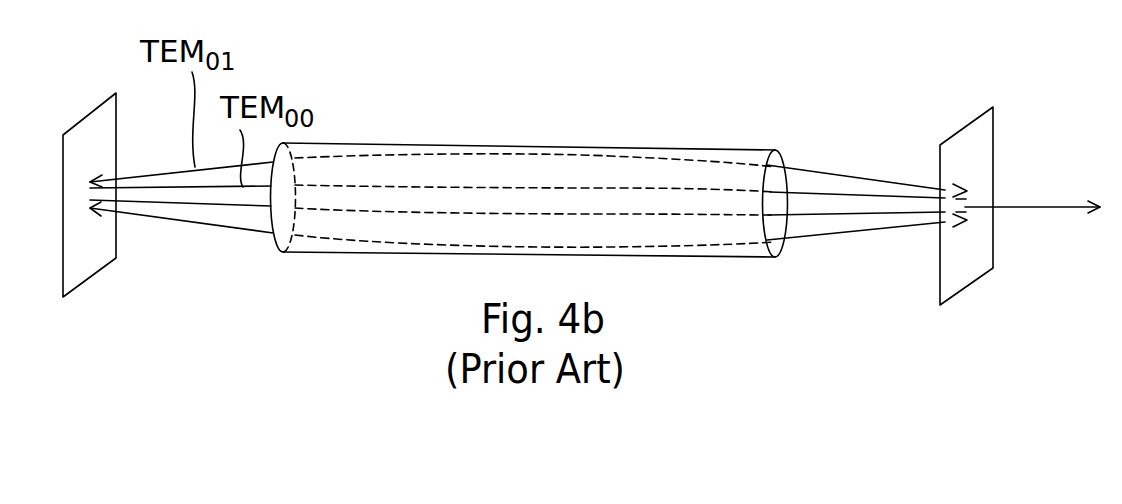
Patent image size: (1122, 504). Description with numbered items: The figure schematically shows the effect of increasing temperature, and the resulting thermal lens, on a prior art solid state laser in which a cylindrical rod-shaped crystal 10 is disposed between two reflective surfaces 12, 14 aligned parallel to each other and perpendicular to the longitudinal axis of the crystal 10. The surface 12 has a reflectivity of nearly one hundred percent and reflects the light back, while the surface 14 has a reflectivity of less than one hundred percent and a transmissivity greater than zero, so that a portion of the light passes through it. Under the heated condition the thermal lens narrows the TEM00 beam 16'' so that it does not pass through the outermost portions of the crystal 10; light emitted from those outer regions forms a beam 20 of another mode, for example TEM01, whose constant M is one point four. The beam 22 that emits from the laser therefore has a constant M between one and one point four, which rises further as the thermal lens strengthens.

The cylindrical rod-shaped crystal 10 is at (540, 145).
The reflective surface 12 is at (83, 118).
The reflective surface 14 is at (963, 128).
The TEM00 beam 16'' is at (856, 248).
The beam of another mode 20 is at (842, 175).
The emitted beam 22 is at (1047, 210).